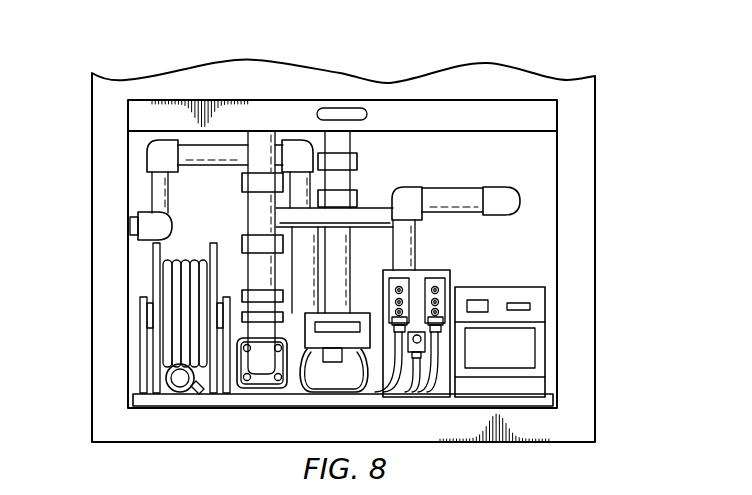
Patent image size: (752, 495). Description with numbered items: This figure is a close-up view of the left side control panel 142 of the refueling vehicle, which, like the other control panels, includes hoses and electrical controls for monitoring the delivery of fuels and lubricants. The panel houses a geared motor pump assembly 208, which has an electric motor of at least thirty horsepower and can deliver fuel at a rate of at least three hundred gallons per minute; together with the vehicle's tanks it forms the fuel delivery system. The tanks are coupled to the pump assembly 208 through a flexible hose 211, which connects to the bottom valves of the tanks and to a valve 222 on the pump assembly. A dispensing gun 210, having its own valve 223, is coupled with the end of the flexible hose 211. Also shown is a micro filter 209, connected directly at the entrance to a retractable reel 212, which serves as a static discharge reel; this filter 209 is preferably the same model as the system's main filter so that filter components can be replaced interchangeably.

The left side control panel 142 is at (585, 15).
The geared motor pump assembly 208 is at (330, 383).
The micro filter 209 is at (152, 315).
The dispensing gun 210 is at (173, 396).
The flexible hose 211 is at (162, 287).
The retractable reel 212 is at (160, 253).
The valve 222 is at (262, 303).
The valve 223 is at (205, 396).